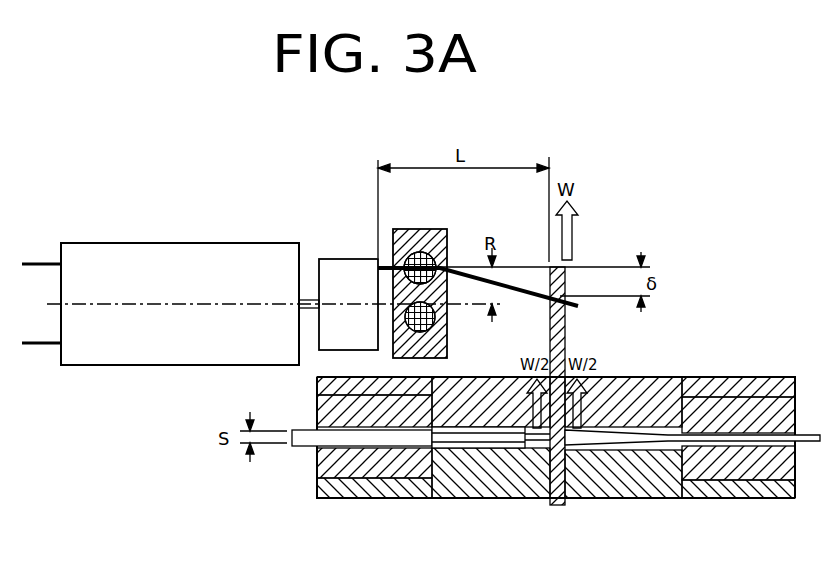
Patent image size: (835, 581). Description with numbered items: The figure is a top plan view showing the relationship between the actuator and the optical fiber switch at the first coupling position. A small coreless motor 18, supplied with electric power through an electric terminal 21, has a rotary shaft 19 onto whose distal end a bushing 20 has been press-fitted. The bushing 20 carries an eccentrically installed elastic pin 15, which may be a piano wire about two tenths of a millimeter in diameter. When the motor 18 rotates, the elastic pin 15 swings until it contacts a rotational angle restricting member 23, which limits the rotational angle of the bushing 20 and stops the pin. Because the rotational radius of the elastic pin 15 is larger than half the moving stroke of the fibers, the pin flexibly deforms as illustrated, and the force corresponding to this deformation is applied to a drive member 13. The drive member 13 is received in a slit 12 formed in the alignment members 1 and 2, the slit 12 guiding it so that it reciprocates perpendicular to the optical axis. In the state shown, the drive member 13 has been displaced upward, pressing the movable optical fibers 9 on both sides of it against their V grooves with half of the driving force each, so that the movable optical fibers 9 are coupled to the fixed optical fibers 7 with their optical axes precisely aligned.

The alignment member 1 is at (712, 385).
The alignment member 2 is at (733, 498).
The fixed optical fiber 7 is at (490, 435).
The movable optical fiber 9 is at (645, 427).
The slit 12 is at (559, 505).
The drive member 13 is at (565, 274).
The elastic pin 15 is at (525, 285).
The small coreless motor 18 is at (172, 262).
The rotary shaft 19 is at (308, 298).
The bushing 20 is at (353, 262).
The electric terminal 21 is at (38, 345).
The rotational angle restricting member 23 is at (410, 230).